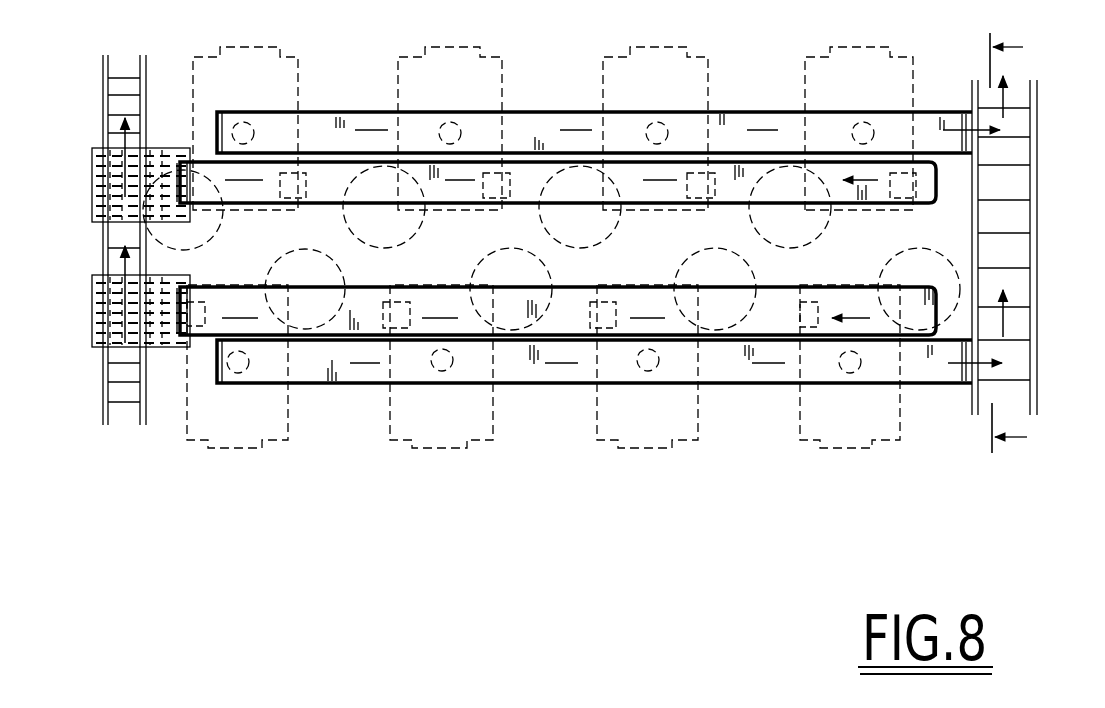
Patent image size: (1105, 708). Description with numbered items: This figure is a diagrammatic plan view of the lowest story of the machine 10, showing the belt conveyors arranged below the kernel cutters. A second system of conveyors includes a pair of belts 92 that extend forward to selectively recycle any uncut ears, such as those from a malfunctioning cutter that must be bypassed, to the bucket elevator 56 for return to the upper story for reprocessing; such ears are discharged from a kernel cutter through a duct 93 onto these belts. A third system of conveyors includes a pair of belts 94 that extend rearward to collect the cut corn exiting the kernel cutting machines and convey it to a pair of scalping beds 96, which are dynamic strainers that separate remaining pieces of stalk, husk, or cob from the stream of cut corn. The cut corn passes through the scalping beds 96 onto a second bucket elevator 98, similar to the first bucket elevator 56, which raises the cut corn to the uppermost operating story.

The machine 10 is at (990, 243).
The bucket elevator 56 is at (1035, 154).
The belts 92 is at (540, 118).
The duct 93 is at (243, 122).
The belts 94 is at (325, 185).
The scalping beds 96 is at (92, 197).
The second bucket elevator 98 is at (123, 393).